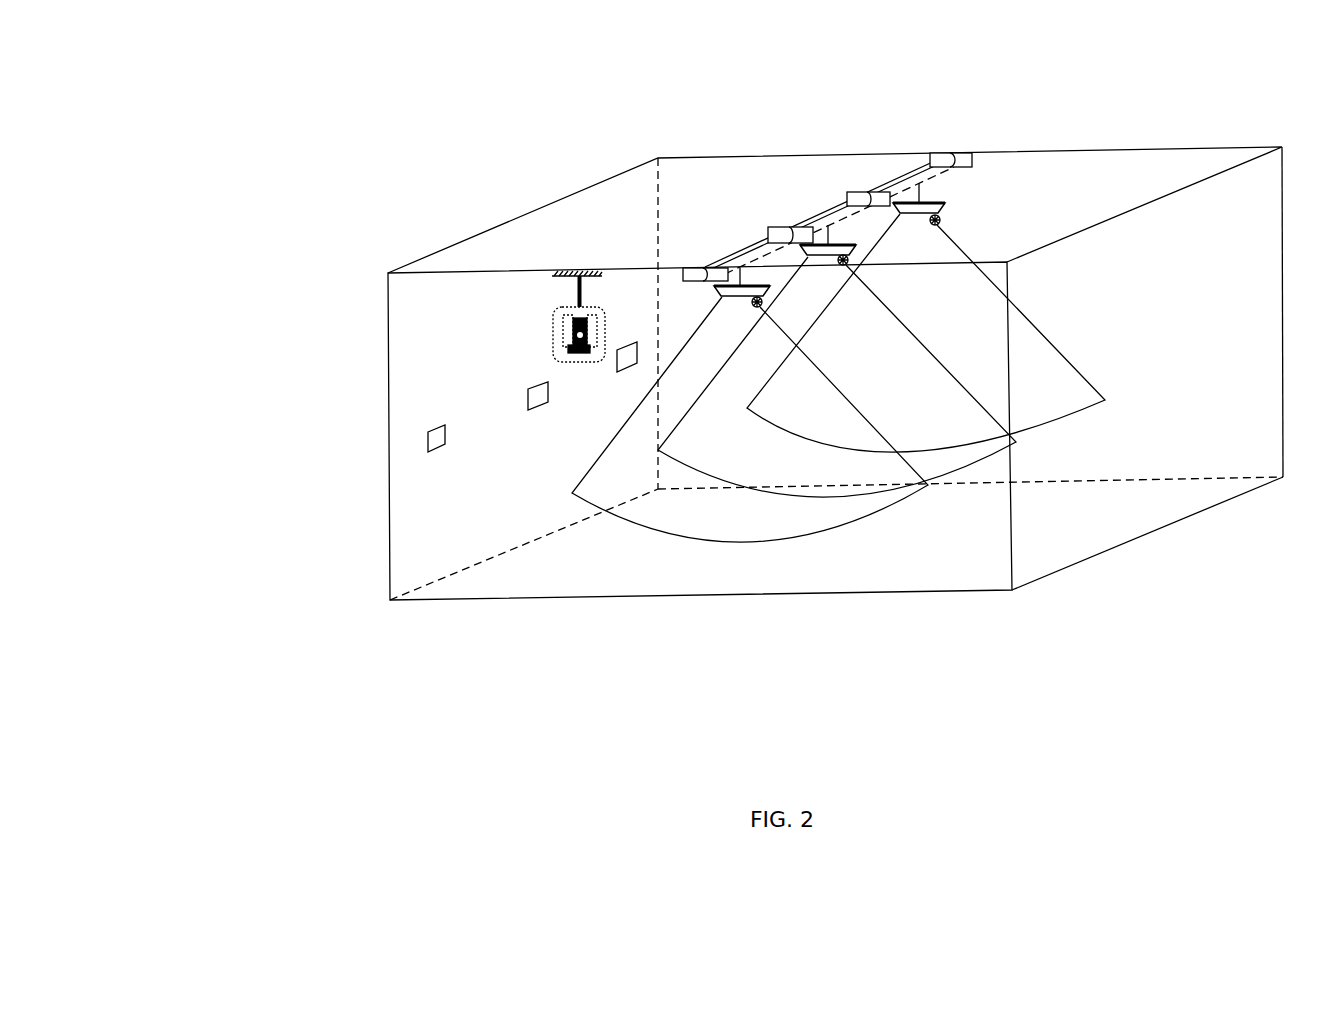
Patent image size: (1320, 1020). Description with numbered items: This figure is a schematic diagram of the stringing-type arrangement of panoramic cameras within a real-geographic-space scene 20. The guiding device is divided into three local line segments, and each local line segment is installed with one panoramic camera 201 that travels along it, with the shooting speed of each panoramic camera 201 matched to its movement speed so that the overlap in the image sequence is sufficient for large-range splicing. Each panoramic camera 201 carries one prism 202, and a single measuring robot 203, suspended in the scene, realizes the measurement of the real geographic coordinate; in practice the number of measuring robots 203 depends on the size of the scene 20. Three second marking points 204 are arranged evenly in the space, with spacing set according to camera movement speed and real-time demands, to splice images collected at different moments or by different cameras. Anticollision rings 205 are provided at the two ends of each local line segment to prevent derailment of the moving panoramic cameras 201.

The real-geographic-space scene 20 is at (705, 403).
The panoramic camera 201 is at (615, 367).
The prism 202 is at (528, 176).
The measuring robot 203 is at (552, 297).
The second marking point 204 is at (380, 397).
The anticollision ring 205 is at (792, 189).